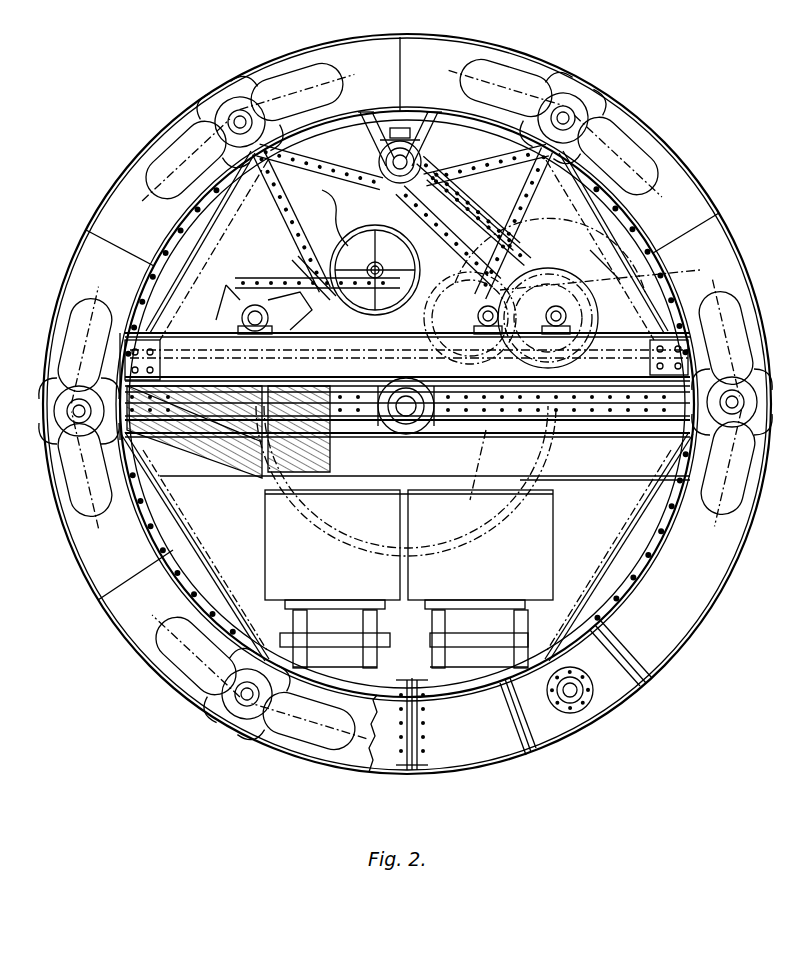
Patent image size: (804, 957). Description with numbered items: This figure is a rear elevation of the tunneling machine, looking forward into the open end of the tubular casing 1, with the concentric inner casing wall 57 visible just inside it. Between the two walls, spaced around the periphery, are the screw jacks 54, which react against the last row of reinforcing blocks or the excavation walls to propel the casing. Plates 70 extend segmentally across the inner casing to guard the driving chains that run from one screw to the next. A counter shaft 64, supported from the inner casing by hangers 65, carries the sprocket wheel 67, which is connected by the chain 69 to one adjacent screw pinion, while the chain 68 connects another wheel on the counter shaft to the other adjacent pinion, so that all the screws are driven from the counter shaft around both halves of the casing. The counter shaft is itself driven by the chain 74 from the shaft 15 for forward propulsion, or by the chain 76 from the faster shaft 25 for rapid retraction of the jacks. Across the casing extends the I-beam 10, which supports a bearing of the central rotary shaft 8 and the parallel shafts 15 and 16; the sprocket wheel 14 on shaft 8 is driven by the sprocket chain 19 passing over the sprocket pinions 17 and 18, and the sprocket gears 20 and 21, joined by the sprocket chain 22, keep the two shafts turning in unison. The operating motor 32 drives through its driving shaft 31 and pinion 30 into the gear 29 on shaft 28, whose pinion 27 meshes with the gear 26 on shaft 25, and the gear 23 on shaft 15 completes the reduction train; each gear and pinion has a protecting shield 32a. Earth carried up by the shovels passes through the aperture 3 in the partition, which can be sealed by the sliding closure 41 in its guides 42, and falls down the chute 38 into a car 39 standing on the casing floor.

The tubular casing 1 is at (66, 258).
The aperture 3 is at (196, 344).
The rotary shaft 8 is at (404, 432).
The I-beam 10 is at (226, 398).
The sprocket wheel 14 is at (548, 466).
The shaft 15 is at (578, 320).
The shaft 16 is at (280, 262).
The sprocket pinion 17 is at (610, 255).
The sprocket pinion 18 is at (300, 256).
The sprocket chain 19 is at (407, 385).
The sprocket gear 20 is at (552, 266).
The sprocket gear 21 is at (236, 294).
The sprocket chain 22 is at (600, 280).
The gear 23 is at (598, 350).
The shaft 25 is at (490, 346).
The gear 26 is at (425, 465).
The pinion 27 is at (410, 324).
The shaft 28 is at (470, 318).
The gear 29 is at (364, 352).
The pinion 30 is at (296, 311).
The driving shaft 31 is at (384, 230).
The operating motor 32 is at (330, 217).
The protecting shield 32a is at (613, 274).
The chute 38 is at (222, 458).
The car 39 is at (266, 556).
The closure 41 is at (278, 202).
The guides 42 is at (186, 215).
The jacks 54 is at (240, 108).
The inner casing wall 57 is at (524, 695).
The counter shaft 64 is at (420, 140).
The hangers 65 is at (412, 130).
The sprocket wheel 67 is at (372, 158).
The chain 68 is at (480, 170).
The chain 69 is at (319, 164).
The plates 70 is at (582, 212).
The chain 74 is at (485, 223).
The chain 76 is at (448, 236).